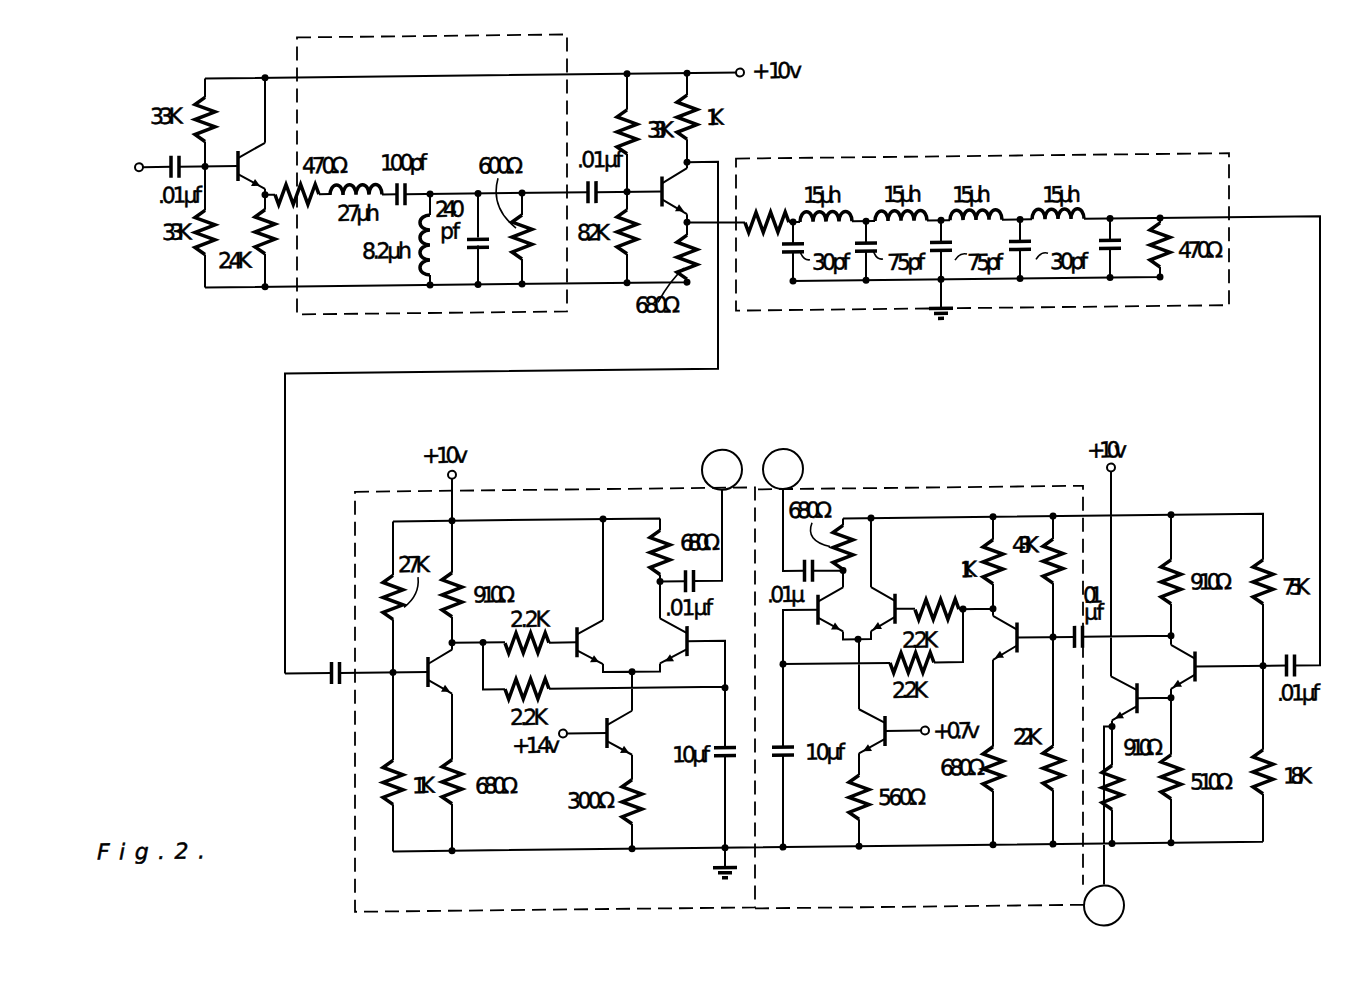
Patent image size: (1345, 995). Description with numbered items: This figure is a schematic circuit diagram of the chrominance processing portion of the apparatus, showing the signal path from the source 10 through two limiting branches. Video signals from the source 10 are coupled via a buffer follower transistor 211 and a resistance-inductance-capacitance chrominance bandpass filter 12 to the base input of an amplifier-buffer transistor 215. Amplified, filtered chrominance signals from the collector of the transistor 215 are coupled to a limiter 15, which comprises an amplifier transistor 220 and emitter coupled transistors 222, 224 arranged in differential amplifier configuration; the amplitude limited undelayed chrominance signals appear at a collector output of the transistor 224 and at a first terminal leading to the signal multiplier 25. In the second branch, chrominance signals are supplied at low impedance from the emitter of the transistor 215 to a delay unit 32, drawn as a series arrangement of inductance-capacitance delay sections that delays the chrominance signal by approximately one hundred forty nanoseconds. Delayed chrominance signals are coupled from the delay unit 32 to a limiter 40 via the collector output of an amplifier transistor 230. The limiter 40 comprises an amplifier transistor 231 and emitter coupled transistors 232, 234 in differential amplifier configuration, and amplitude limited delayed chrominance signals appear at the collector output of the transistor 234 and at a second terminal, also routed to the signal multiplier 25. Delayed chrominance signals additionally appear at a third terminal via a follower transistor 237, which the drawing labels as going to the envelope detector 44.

The source 10 is at (104, 164).
The chrominance bandpass frequency selection unit 12 is at (567, 33).
The limiter 15 is at (588, 488).
The signal multiplier 25 is at (763, 448).
The delay unit 32 is at (1013, 157).
The limiter 40 is at (990, 490).
The envelope detector 44 is at (1171, 897).
The buffer follower transistor 211 is at (281, 166).
The amplifier-buffer transistor 215 is at (706, 197).
The amplifier transistor 220 is at (476, 679).
The emitter coupled transistor 222 is at (626, 647).
The emitter coupled transistor 224 is at (671, 648).
The amplifier transistor 230 is at (1177, 679).
The amplifier transistor 231 is at (1000, 648).
The emitter coupled transistor 232 is at (912, 589).
The emitter coupled transistor 234 is at (863, 619).
The follower transistor 237 is at (1122, 716).